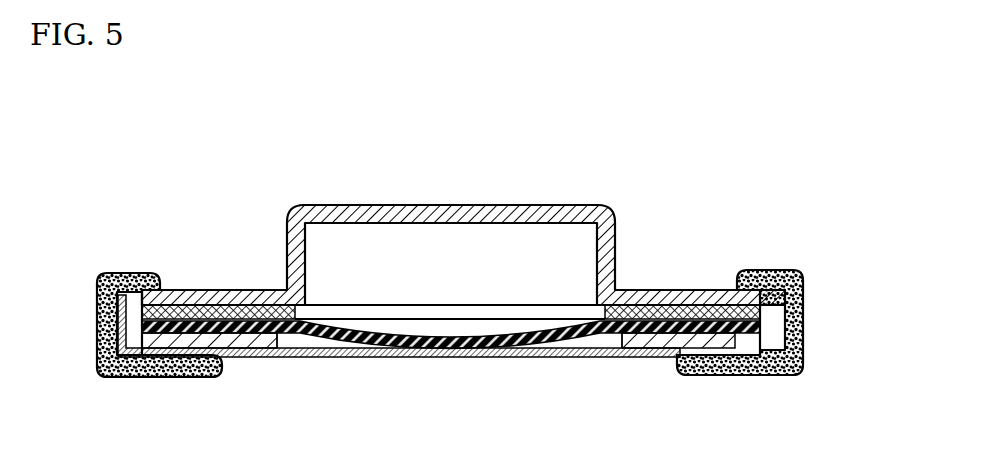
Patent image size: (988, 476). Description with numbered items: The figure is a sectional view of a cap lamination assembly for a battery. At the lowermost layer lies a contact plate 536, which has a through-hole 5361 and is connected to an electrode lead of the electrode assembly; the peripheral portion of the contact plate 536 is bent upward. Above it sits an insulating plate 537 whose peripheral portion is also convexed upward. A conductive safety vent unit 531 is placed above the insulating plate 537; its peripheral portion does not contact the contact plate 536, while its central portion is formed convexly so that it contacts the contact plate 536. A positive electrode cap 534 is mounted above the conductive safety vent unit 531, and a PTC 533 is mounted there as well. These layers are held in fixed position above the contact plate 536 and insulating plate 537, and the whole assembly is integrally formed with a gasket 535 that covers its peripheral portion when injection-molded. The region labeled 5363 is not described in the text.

The conductive safety vent unit 531 is at (532, 357).
The PTC 533 is at (688, 292).
The positive electrode cap 534 is at (427, 205).
The gasket 535 is at (803, 298).
The contact plate 536 is at (430, 357).
The through-hole 5361 is at (337, 358).
The plate 5363 is at (690, 355).
The insulating plate 537 is at (242, 353).